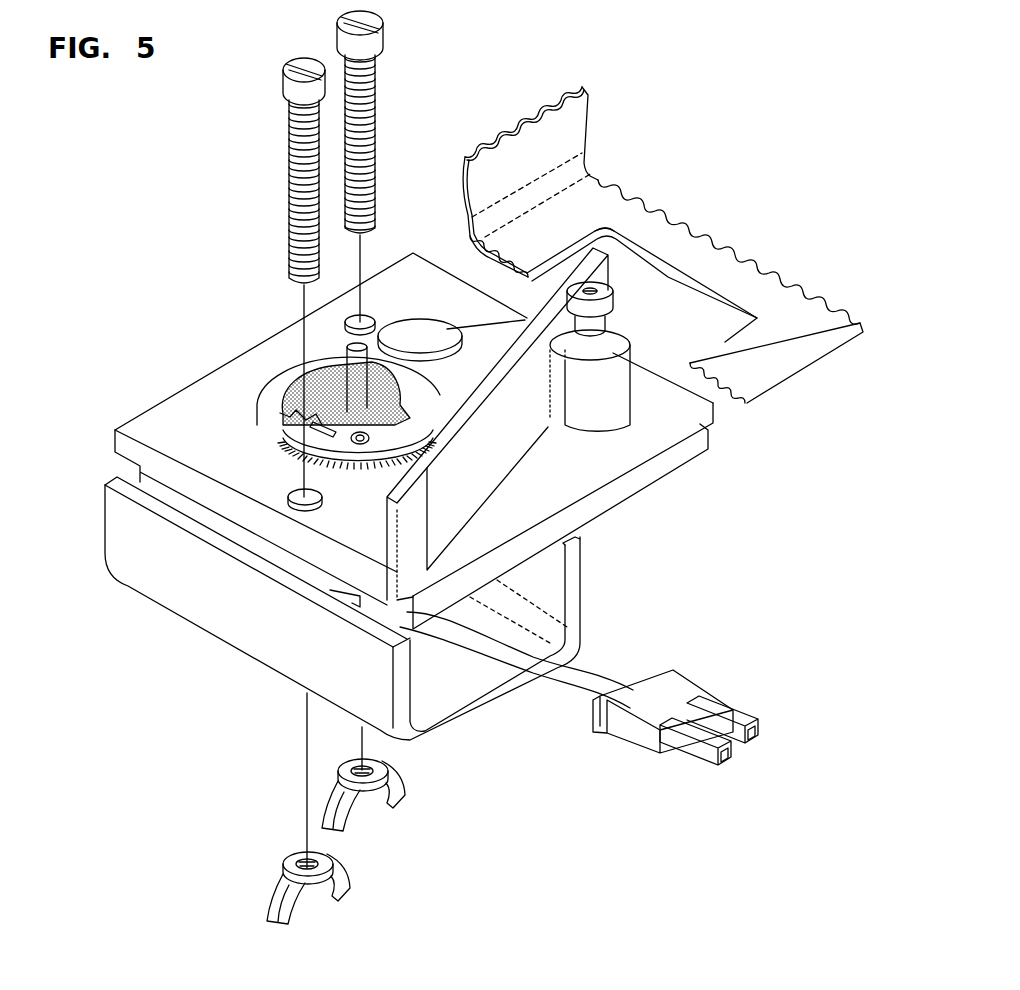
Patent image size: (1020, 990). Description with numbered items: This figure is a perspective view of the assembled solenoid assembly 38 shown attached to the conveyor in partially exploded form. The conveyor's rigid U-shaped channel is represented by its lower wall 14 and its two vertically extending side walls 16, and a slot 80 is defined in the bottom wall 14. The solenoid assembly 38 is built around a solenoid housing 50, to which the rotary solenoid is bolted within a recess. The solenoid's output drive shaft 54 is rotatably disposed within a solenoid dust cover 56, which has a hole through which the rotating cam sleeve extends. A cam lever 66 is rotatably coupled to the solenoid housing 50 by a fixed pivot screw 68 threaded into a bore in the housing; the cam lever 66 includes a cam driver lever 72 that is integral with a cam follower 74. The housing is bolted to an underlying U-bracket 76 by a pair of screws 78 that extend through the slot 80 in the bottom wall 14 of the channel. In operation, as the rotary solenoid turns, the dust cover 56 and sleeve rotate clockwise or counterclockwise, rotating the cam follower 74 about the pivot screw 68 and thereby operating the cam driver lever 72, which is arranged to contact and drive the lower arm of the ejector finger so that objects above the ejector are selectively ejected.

The lower wall 14 is at (540, 230).
The side walls 16 is at (590, 108).
The solenoid assembly 38 is at (150, 183).
The solenoid housing 50 is at (712, 442).
The output drive shaft 54 is at (330, 368).
The solenoid dust cover 56 is at (297, 385).
The cam lever 66 is at (677, 442).
The fixed pivot screw 68 is at (617, 299).
The cam driver lever 72 is at (387, 565).
The cam follower 74 is at (413, 333).
The U-bracket 76 is at (497, 694).
The screws 78 is at (296, 165).
The slot 80 is at (727, 341).